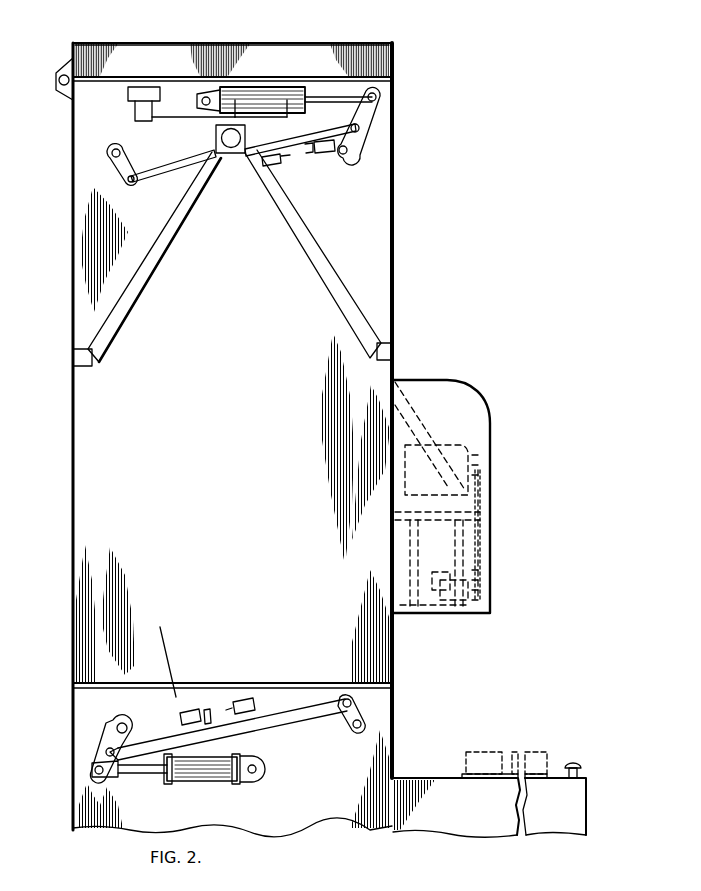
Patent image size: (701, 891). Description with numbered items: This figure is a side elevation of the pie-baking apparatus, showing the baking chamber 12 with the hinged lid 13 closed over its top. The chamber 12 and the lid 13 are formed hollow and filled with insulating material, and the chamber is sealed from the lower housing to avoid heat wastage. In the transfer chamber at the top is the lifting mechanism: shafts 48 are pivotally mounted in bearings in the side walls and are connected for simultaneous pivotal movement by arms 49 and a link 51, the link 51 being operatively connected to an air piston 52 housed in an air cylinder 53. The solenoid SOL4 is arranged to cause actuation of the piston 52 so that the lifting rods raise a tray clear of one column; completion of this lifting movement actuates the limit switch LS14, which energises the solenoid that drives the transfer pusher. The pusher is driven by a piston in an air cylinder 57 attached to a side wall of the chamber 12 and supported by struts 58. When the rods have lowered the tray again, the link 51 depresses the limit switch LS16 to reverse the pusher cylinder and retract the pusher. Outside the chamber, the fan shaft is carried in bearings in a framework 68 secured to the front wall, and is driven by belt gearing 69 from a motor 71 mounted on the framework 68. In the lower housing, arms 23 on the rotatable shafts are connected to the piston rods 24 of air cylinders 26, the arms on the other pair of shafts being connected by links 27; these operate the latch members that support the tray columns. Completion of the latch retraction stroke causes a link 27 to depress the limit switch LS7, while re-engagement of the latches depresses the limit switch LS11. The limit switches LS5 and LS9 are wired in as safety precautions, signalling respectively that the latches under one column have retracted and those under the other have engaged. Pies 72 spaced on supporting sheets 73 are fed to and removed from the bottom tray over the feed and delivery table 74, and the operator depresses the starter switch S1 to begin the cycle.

The baking chamber 12 is at (73, 408).
The hinged lid 13 is at (160, 60).
The solenoid SOL4 is at (128, 92).
The air cylinder 53 is at (262, 88).
The air piston 52 is at (318, 97).
The shafts 48 is at (114, 147).
The arms 49 is at (126, 158).
The link 51 is at (150, 170).
The air cylinder 57 is at (228, 148).
The limit switch LS14 is at (322, 158).
The limit switch LS16 is at (270, 170).
The struts 58 is at (145, 275).
The motor 71 is at (455, 445).
The belt gearing 69 is at (482, 528).
The framework 68 is at (465, 556).
The limit switch LS9 is at (178, 698).
The limit switch LS7 is at (246, 700).
The limit switch LS5 is at (243, 700).
The limit switch LS11 is at (190, 710).
The arms 23 is at (346, 700).
The links 27 is at (148, 740).
The piston rods 24 is at (148, 772).
The air cylinders 26 is at (205, 768).
The feed and delivery table 74 is at (455, 785).
The supporting sheets 73 is at (472, 773).
The pies 72 is at (538, 760).
The starter switch S1 is at (572, 763).